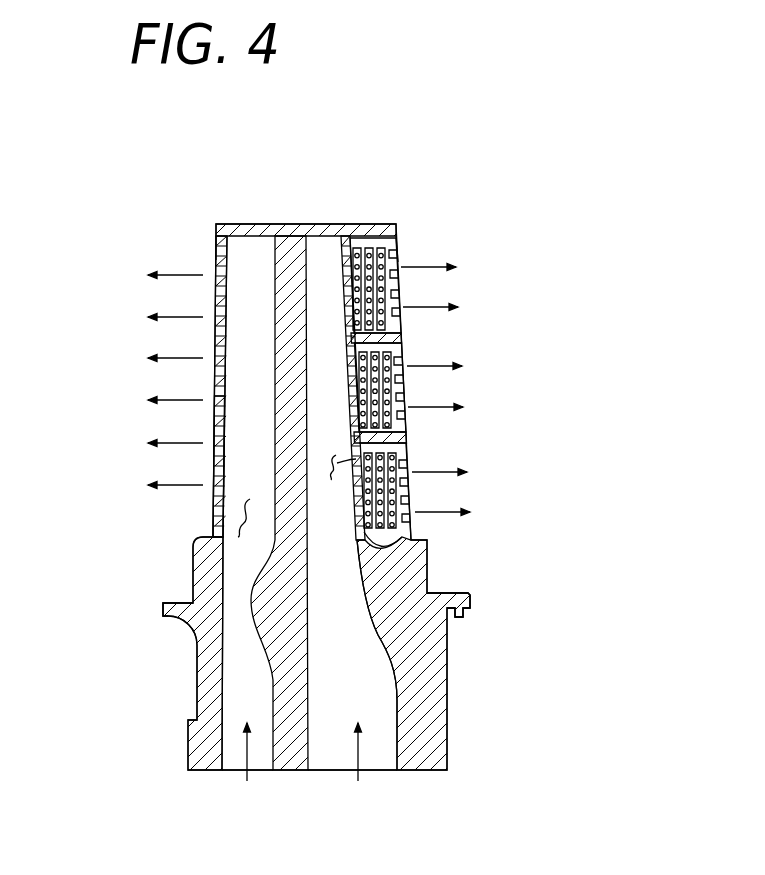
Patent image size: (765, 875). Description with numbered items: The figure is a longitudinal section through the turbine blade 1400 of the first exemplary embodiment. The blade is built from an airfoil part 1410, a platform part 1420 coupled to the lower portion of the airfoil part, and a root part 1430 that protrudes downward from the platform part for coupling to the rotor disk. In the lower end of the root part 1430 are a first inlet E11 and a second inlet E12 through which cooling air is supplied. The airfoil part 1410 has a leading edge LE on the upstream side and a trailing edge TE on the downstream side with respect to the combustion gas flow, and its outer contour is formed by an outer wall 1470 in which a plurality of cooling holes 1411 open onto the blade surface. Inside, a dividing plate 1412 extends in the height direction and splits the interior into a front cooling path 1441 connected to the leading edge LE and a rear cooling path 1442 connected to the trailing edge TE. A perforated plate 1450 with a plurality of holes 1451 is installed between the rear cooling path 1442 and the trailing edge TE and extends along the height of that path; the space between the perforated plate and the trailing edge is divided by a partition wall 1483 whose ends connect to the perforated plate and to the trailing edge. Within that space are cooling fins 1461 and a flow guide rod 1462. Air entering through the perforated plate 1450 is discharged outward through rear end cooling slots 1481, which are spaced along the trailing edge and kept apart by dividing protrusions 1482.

The turbine blade 1400 is at (377, 175).
The airfoil part 1410 is at (218, 223).
The cooling holes 1411 is at (217, 427).
The dividing plate 1412 is at (274, 376).
The platform part 1420 is at (165, 604).
The root part 1430 is at (200, 678).
The front cooling path 1441 is at (245, 520).
The rear cooling path 1442 is at (378, 462).
The perforated plate 1450 is at (342, 280).
The holes 1451 is at (275, 244).
The cooling fins 1461 is at (383, 283).
The flow guide rod 1462 is at (397, 300).
The outer wall 1470 is at (214, 302).
The rear end cooling slots 1481 is at (403, 402).
The dividing protrusions 1482 is at (403, 373).
The partition wall 1483 is at (385, 430).
The leading edge LE is at (216, 240).
The trailing edge TE is at (397, 243).
The first inlet E11 is at (246, 772).
The second inlet E12 is at (356, 772).